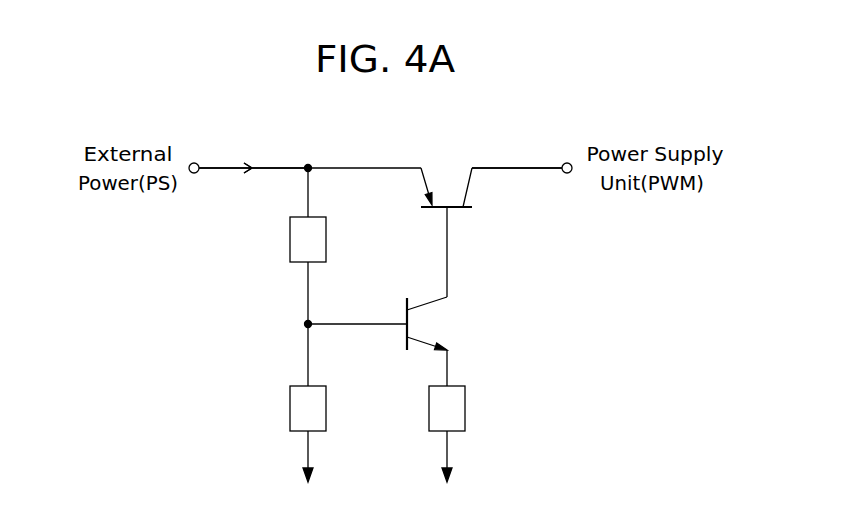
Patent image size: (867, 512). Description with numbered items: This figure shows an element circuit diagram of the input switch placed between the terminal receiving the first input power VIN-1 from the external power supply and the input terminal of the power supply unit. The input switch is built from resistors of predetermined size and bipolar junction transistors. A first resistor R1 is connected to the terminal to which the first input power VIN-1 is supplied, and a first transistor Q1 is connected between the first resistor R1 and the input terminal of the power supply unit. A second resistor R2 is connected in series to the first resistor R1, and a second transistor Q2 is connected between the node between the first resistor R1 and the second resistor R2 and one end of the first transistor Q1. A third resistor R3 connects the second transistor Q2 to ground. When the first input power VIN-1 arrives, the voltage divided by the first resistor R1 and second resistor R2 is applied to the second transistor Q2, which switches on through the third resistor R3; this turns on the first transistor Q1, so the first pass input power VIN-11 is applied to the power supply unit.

The first resistor R1 is at (308, 239).
The second resistor R2 is at (308, 408).
The third resistor R3 is at (447, 408).
The first transistor Q1 is at (446, 187).
The second transistor Q2 is at (429, 323).
The first input power VIN-1 is at (253, 156).
The first pass input power VIN-11 is at (517, 154).